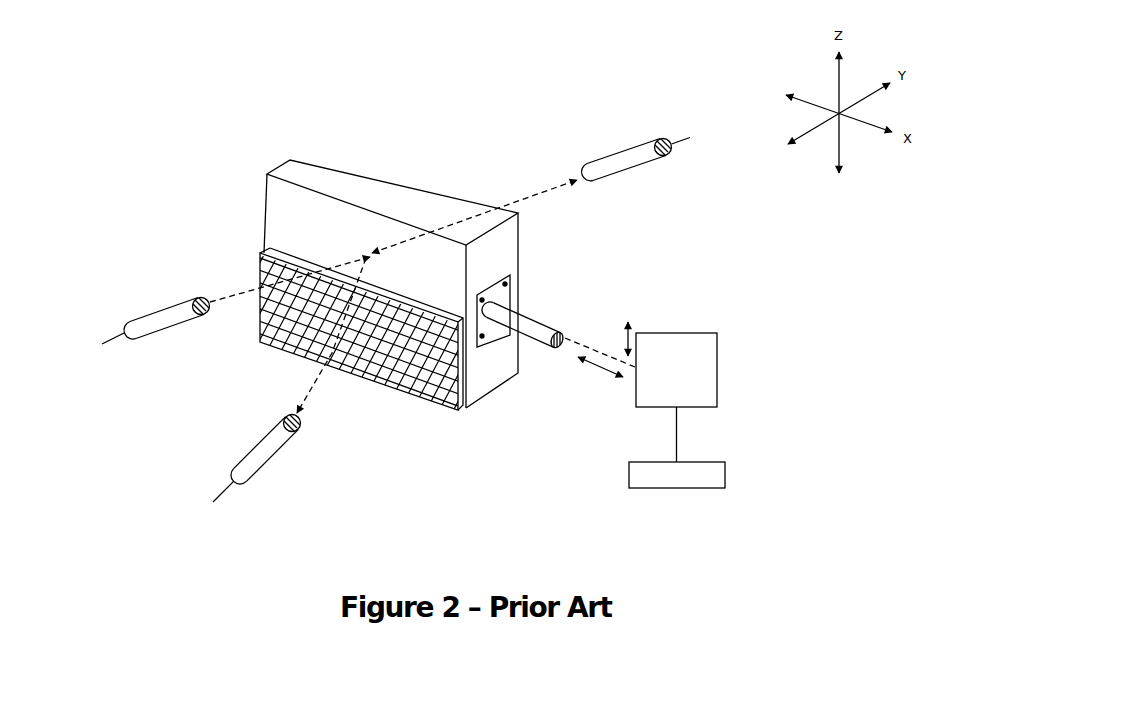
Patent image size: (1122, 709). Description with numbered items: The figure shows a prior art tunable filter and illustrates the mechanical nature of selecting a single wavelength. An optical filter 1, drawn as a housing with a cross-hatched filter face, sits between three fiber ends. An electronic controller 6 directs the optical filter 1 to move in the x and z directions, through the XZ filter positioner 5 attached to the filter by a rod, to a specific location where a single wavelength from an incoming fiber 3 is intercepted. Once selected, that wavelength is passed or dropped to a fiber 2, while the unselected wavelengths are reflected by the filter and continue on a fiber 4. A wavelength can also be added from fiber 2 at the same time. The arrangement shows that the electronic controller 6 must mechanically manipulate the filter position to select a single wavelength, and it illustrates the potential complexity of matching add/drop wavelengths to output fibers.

The optical filter 1 is at (270, 192).
The fiber 2 is at (528, 198).
The incoming fiber 3 is at (238, 293).
The fiber 4 is at (322, 374).
The XZ filter positioner 5 is at (702, 355).
The electronic controller 6 is at (718, 465).